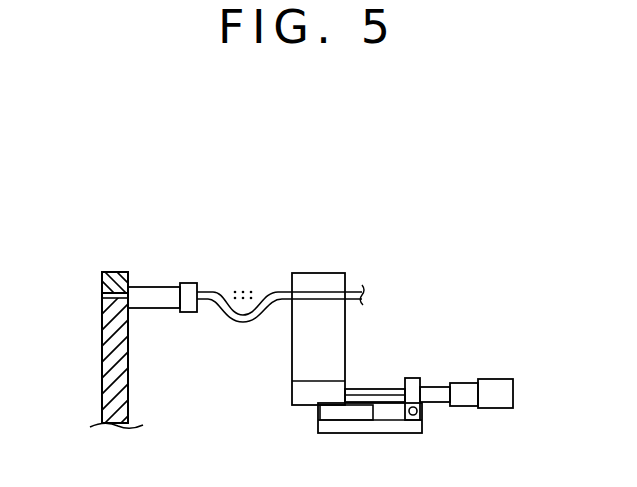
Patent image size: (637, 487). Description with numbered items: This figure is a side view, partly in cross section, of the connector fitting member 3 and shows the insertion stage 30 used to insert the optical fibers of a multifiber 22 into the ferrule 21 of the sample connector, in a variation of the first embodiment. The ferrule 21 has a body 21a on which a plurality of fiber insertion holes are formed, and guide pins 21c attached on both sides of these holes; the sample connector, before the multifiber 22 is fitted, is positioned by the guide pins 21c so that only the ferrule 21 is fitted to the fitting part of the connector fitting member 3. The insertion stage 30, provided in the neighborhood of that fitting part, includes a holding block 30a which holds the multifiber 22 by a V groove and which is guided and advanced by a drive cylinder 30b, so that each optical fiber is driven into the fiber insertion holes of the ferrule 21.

The connector fitting member 3 is at (104, 353).
The ferrule 21 is at (164, 280).
The body 21a is at (167, 303).
The guide pins 21c is at (113, 270).
The multifiber 22 is at (237, 323).
The insertion stage 30 is at (421, 308).
The holding block 30a is at (333, 340).
The drive cylinder 30b is at (502, 387).